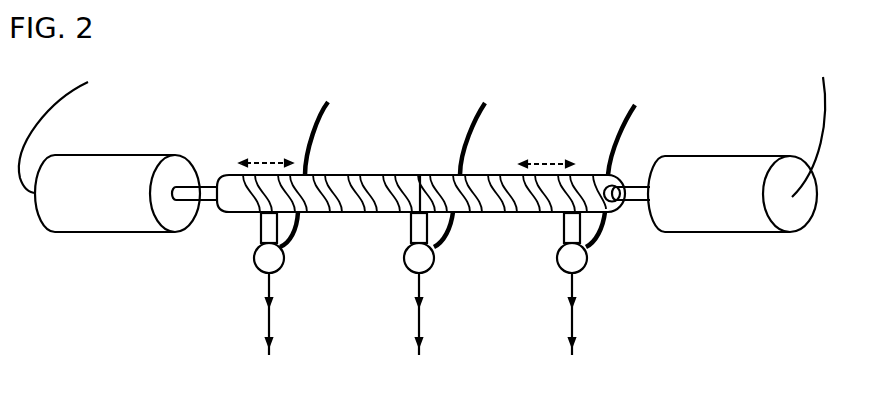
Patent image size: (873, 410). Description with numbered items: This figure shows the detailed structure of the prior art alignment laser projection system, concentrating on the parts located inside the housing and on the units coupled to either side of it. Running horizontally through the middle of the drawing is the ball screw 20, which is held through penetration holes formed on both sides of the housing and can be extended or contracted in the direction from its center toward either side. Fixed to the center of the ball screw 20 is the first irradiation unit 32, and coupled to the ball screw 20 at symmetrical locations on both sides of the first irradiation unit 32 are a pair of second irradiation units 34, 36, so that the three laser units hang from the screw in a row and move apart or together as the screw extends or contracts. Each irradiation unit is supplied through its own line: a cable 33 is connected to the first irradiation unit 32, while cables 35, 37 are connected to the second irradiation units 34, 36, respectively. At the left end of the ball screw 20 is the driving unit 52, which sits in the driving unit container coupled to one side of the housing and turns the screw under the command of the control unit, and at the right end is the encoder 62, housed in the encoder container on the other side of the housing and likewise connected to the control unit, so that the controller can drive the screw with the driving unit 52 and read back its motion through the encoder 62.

The ball screw 20 is at (257, 212).
The driving unit 52 is at (117, 232).
The encoder 62 is at (732, 233).
The first irradiation unit 32 is at (405, 268).
The second irradiation unit 34 is at (272, 273).
The second irradiation unit 36 is at (583, 265).
The cable 33 is at (470, 135).
The cable 35 is at (320, 127).
The cable 37 is at (628, 132).